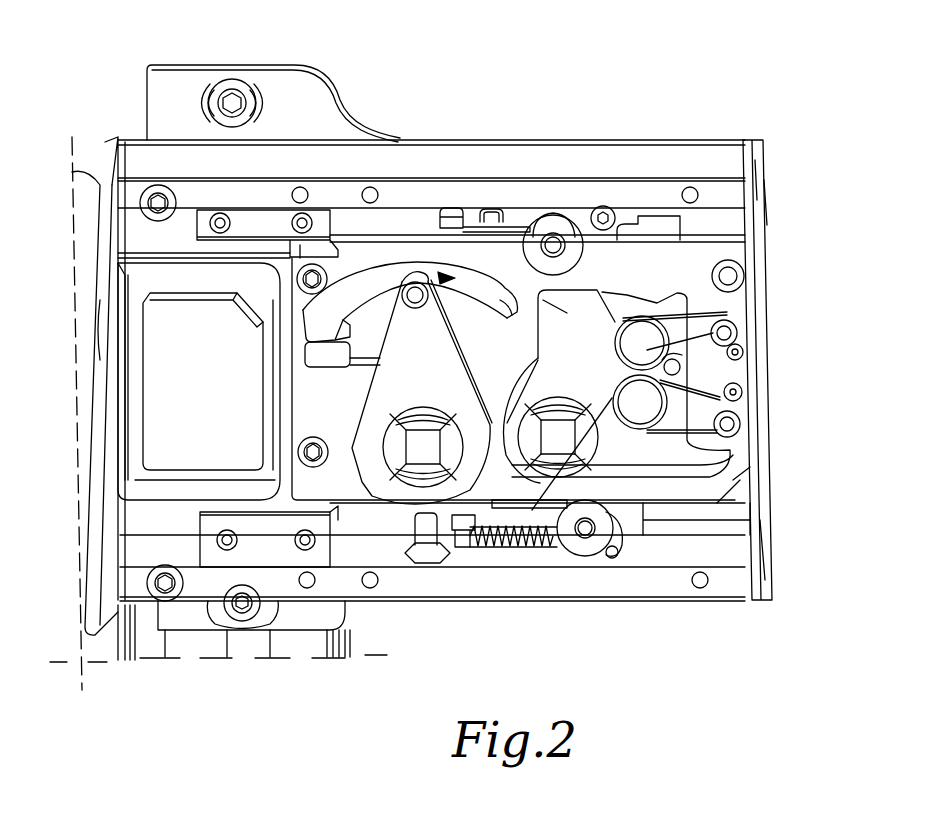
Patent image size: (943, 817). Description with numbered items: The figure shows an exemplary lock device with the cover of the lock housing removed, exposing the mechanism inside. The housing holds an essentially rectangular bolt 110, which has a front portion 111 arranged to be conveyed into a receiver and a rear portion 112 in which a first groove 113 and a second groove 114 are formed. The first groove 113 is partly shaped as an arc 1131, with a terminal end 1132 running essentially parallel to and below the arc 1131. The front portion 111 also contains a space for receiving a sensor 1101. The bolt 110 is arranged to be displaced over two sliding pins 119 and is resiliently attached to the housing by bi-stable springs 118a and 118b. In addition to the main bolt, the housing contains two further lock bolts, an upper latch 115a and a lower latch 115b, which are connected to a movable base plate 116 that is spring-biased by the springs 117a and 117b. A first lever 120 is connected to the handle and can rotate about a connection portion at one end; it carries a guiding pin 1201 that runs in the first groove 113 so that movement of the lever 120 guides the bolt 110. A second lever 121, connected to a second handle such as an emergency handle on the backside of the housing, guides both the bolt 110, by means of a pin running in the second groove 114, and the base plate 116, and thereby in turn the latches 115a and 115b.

The bolt 110 is at (365, 247).
The front portion 111 is at (122, 378).
The sensor 1101 is at (228, 398).
The rear portion 112 is at (703, 240).
The first groove 113 is at (420, 273).
The arc 1131 is at (503, 297).
The terminal end 1132 is at (350, 358).
The second groove 114 is at (538, 298).
The upper latch 115a is at (243, 222).
The lower latch 115b is at (273, 542).
The movable base plate 116 is at (405, 220).
The spring 117a is at (483, 220).
The spring 117b is at (507, 543).
The bi-stable spring 118a is at (727, 302).
The bi-stable spring 118b is at (730, 458).
The sliding pin 119 is at (553, 233).
The first lever 120 is at (447, 378).
The guiding pin 1201 is at (407, 295).
The second lever 121 is at (600, 297).